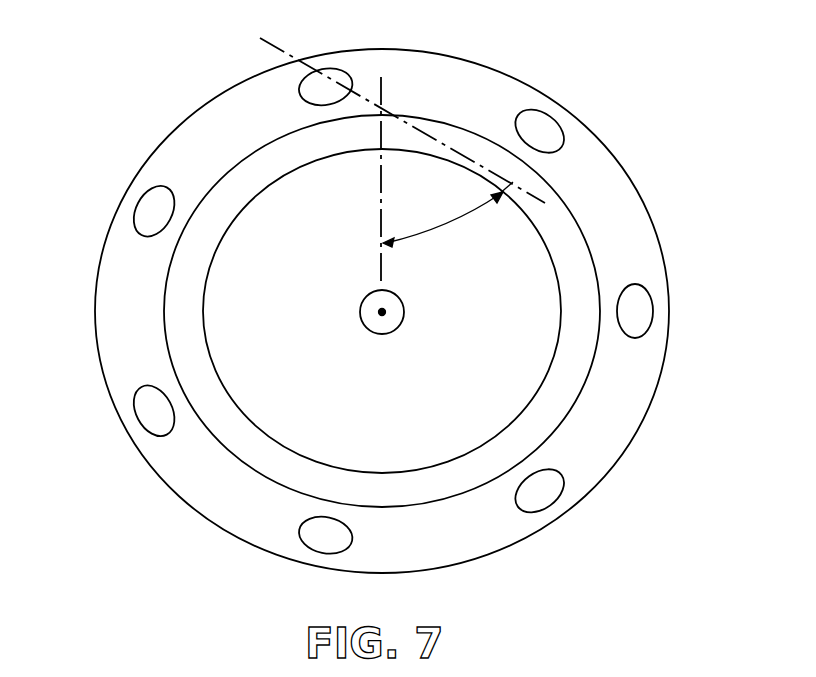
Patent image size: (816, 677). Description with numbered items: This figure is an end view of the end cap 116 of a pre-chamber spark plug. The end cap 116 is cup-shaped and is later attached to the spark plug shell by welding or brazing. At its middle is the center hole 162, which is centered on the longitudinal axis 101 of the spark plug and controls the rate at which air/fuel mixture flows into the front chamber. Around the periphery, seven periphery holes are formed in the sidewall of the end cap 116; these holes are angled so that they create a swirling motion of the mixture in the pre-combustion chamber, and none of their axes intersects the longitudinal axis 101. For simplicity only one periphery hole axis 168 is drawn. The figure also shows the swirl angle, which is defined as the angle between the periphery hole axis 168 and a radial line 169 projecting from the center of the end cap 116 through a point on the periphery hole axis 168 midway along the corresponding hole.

The end cap 116 is at (650, 58).
The center hole 162 is at (402, 317).
The longitudinal axis 101 is at (360, 318).
The periphery hole axis 168 is at (430, 138).
The radial line 169 is at (380, 223).